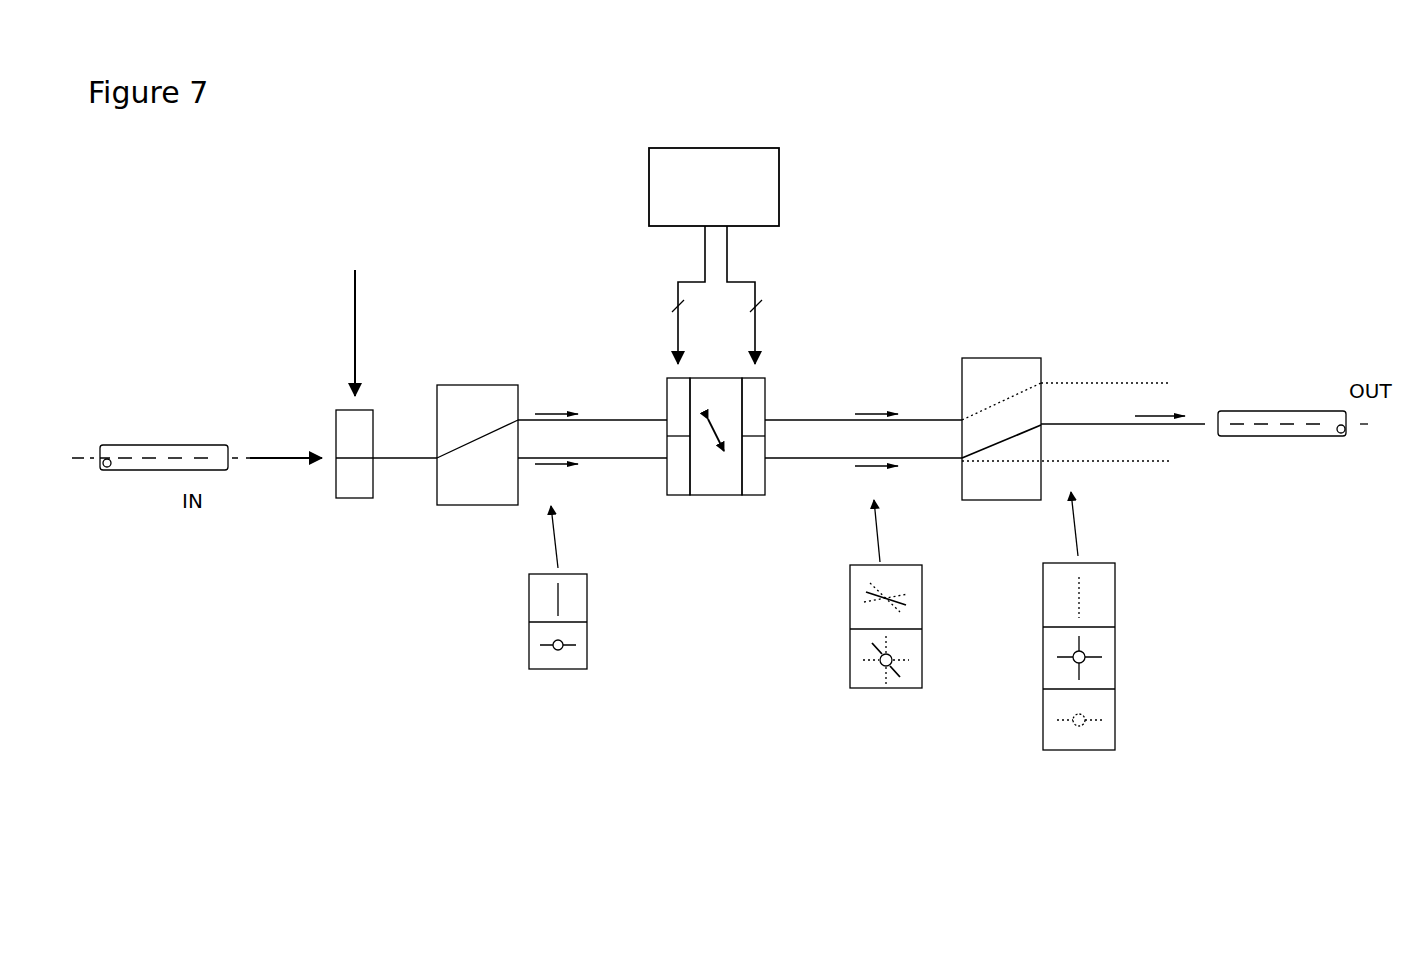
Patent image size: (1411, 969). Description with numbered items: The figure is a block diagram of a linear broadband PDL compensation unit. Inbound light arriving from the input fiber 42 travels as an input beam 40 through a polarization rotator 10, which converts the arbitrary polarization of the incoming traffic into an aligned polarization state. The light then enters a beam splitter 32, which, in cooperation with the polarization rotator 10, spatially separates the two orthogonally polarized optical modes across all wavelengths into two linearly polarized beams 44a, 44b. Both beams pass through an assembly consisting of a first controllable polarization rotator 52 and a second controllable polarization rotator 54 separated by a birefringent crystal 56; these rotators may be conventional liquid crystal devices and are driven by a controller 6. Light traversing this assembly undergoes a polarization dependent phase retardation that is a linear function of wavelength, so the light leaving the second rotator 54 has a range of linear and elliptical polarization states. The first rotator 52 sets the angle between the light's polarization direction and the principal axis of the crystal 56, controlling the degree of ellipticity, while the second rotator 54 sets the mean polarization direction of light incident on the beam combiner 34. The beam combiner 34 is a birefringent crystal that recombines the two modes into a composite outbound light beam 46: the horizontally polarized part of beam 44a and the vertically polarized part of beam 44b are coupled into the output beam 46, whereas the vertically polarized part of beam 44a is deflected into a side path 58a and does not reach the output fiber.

The controller 6 is at (683, 148).
The polarization rotator 10 is at (361, 500).
The beam splitter 32 is at (487, 385).
The beam combiner 34 is at (1007, 358).
The input beam 40 is at (290, 445).
The input optical fiber 42 is at (184, 445).
The linearly polarized beam 44a is at (637, 420).
The linearly polarized beam 44b is at (641, 462).
The composite outbound light beam 46 is at (1192, 424).
The first controllable polarization rotator 52 is at (674, 497).
The second controllable polarization rotator 54 is at (752, 496).
The birefringent crystal 56 is at (717, 496).
The side path 58a is at (1141, 383).